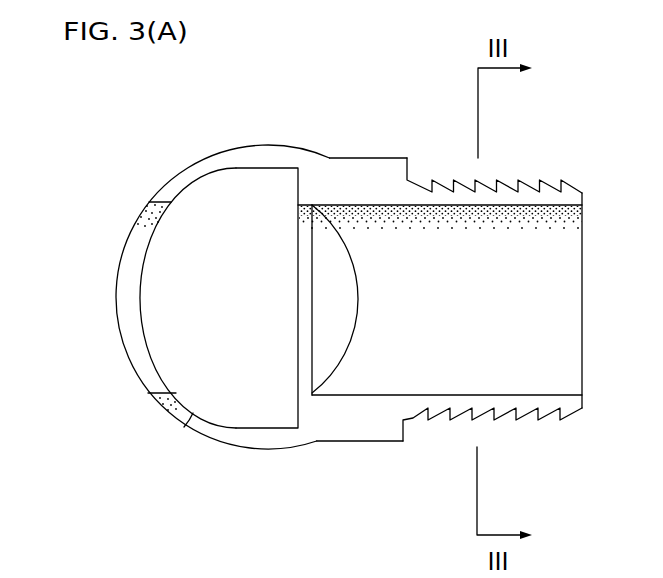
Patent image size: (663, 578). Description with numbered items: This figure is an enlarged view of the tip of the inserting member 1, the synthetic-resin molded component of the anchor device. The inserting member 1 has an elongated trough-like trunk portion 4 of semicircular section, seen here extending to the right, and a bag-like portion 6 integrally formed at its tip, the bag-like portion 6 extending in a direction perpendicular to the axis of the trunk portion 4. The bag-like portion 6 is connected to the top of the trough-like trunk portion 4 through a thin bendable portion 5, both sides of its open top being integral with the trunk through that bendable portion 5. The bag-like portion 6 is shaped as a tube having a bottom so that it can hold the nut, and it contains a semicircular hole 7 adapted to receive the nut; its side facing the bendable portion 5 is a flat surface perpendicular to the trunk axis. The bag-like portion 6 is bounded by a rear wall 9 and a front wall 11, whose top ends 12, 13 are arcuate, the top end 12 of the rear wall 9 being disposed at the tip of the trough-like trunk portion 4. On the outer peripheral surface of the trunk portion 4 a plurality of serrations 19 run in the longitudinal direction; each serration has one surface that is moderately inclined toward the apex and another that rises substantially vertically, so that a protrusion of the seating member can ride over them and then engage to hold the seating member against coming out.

The inserting member 1 is at (444, 298).
The trough-like trunk portion 4 is at (575, 180).
The bendable portion 5 is at (310, 188).
The bag-like portion 6 is at (188, 162).
The semicircular hole 7 is at (262, 213).
The rear wall 9 is at (297, 352).
The front wall 11 is at (184, 428).
The top end of rear wall 12 is at (305, 374).
The top end of front wall 13 is at (127, 320).
The serrations 19 is at (528, 180).